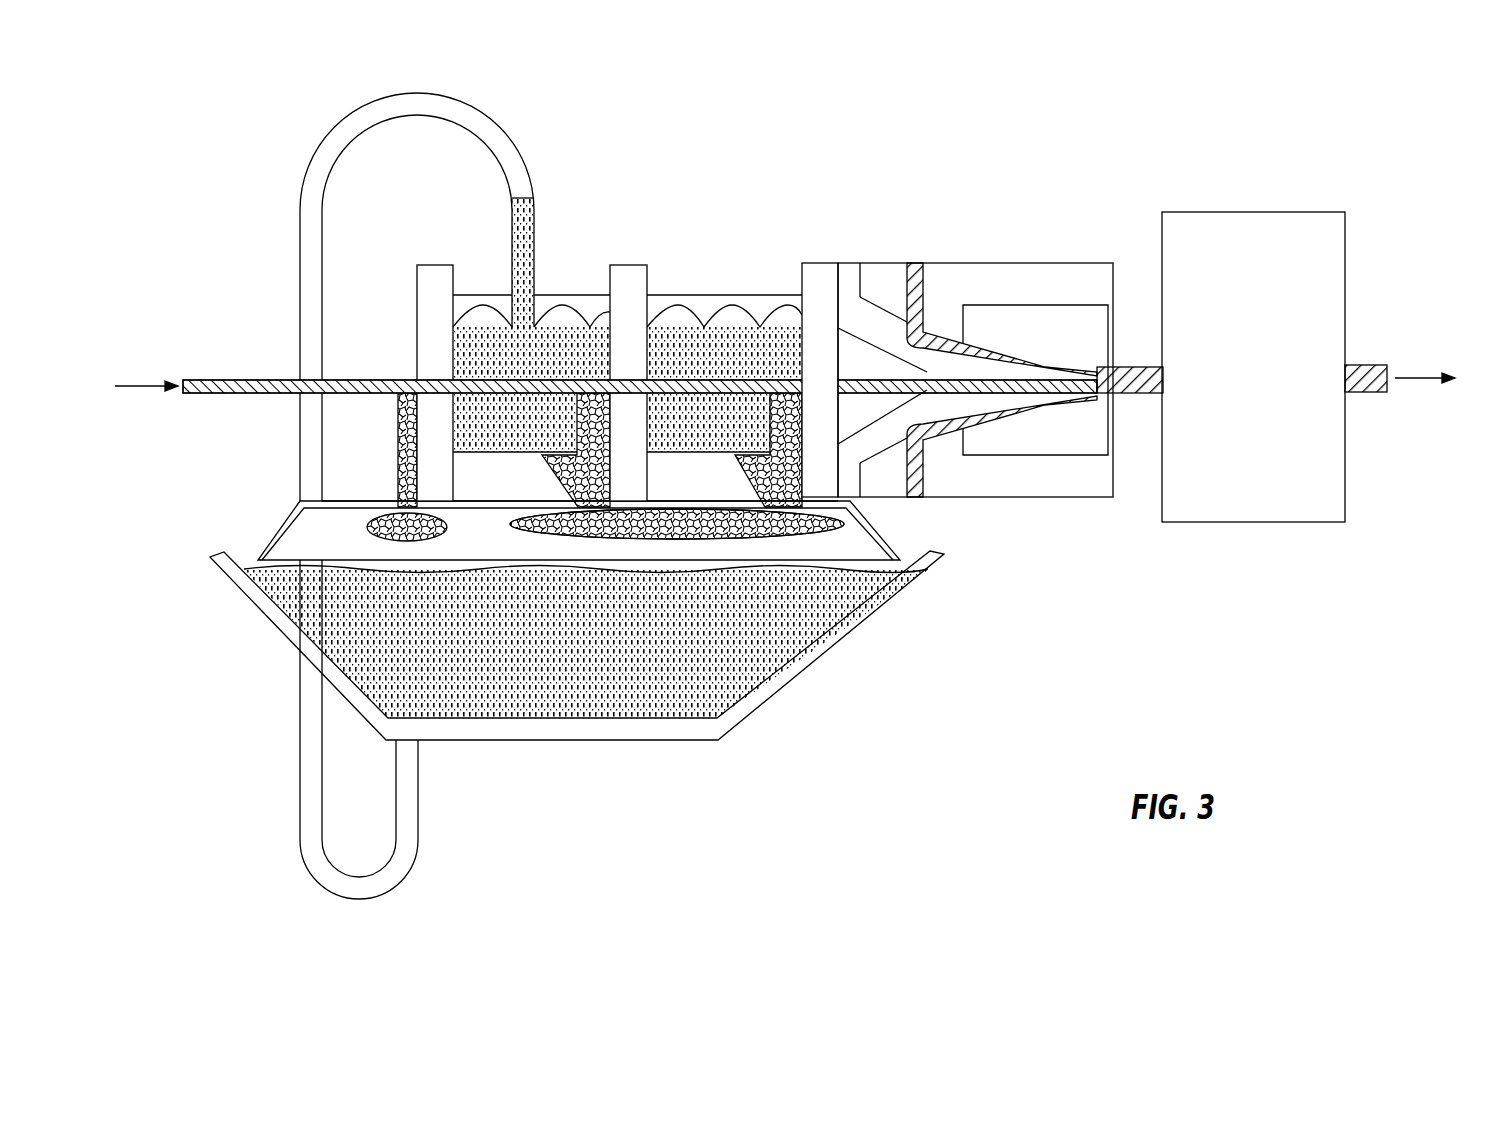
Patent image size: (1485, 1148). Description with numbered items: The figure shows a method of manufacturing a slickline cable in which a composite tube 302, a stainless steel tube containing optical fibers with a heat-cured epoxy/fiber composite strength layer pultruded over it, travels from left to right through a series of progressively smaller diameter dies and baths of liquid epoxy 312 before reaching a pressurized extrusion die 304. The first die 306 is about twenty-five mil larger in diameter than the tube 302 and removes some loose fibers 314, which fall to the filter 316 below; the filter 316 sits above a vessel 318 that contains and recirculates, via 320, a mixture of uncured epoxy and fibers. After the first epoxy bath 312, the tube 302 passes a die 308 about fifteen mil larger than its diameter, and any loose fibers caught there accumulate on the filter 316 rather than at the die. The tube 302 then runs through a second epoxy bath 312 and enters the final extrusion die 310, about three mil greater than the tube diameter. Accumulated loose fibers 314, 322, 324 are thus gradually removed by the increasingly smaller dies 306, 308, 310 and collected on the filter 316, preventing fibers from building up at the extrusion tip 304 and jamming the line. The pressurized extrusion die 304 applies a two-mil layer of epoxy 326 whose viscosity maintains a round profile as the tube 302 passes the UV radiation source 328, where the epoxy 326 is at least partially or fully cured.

The composite tube 302 is at (210, 380).
The pressurized extrusion die 304 is at (1088, 372).
The first die 306 is at (412, 378).
The second die 308 is at (607, 367).
The final extrusion die 310 is at (797, 368).
The bath of liquid epoxy 312 is at (488, 340).
The loose fibers 314 is at (312, 440).
The filter 316 is at (857, 531).
The vessel 318 is at (767, 688).
The recirculating line 320 is at (407, 823).
The accumulated loose fibers 322 is at (527, 533).
The accumulated loose fibers 324 is at (808, 532).
The epoxy layer 326 is at (917, 265).
The UV radiation source 328 is at (1210, 503).